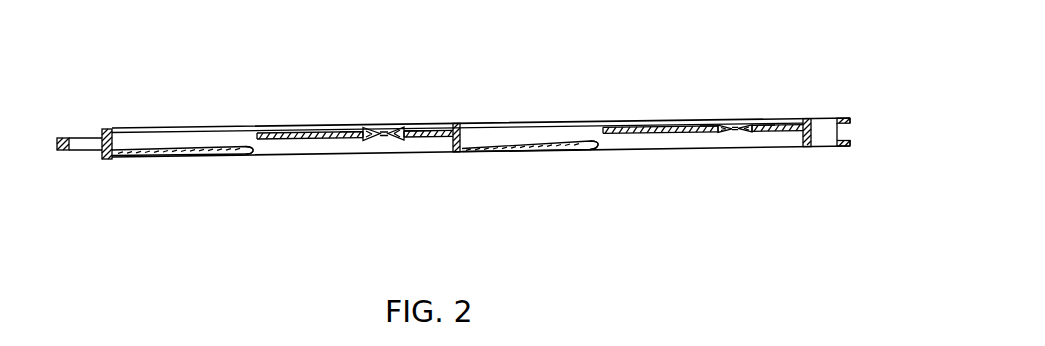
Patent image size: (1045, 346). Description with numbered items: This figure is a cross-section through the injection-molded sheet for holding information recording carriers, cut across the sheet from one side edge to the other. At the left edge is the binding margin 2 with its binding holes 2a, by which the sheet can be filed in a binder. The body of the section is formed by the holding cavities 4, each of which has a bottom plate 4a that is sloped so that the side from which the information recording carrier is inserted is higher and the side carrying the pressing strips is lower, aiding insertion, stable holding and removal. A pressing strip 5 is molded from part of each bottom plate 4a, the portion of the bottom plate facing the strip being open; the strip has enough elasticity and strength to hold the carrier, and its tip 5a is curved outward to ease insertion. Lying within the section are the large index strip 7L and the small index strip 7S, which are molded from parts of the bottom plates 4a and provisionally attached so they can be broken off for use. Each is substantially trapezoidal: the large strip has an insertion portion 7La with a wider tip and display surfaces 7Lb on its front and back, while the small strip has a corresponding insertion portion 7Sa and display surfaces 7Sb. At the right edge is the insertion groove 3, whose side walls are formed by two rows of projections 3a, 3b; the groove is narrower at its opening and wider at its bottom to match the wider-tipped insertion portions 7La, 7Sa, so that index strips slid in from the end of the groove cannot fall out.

The binding margin 2 is at (64, 139).
The binding holes 2a is at (88, 142).
The insertion groove 3 is at (851, 133).
The projections 3a is at (850, 118).
The projections 3b is at (850, 146).
The holding cavity 4 is at (313, 143).
The bottom plate 4a is at (285, 136).
The pressing strip 5 is at (209, 156).
The tip of the pressing strip 5a is at (245, 155).
The large index strip 7L is at (360, 140).
The insertion portion of the large index strip 7La is at (396, 131).
The display surface of the large index strip 7Lb is at (345, 131).
The small index strip 7S is at (692, 118).
The insertion portion of the small index strip 7Sa is at (743, 125).
The display surface of the small index strip 7Sb is at (767, 132).